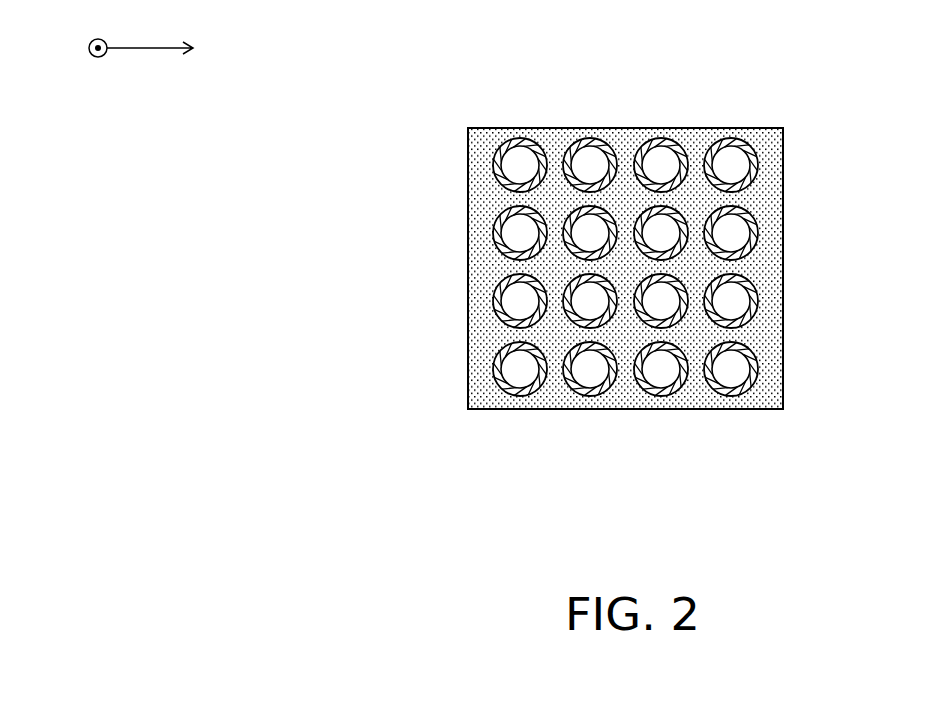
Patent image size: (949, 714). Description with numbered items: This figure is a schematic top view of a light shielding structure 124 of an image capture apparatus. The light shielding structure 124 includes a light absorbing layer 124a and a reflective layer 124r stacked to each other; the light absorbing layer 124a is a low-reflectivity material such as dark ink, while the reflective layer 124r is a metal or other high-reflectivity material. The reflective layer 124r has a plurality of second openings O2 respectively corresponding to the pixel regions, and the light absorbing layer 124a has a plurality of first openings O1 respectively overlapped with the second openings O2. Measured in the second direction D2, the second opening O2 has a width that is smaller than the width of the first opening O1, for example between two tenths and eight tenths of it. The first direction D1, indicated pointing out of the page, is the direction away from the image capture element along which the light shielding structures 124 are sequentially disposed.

The light shielding structure 124 is at (701, 294).
The light absorbing layer 124a is at (783, 173).
The reflective layer 124r is at (714, 257).
The first opening O1 is at (726, 160).
The second opening O2 is at (783, 215).
The first direction D1 is at (88, 52).
The second direction D2 is at (169, 52).